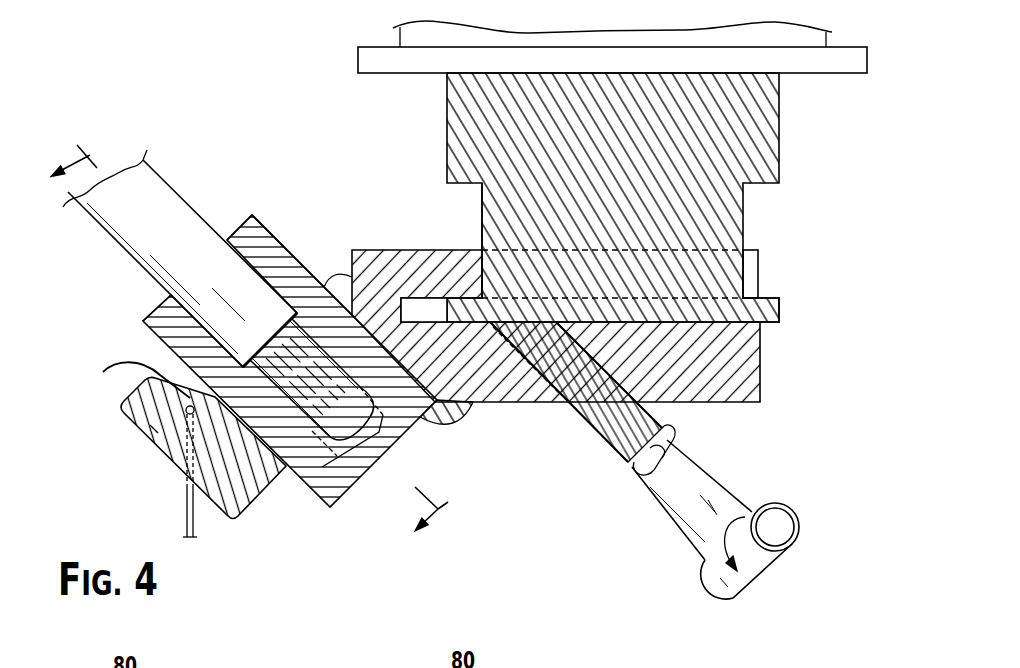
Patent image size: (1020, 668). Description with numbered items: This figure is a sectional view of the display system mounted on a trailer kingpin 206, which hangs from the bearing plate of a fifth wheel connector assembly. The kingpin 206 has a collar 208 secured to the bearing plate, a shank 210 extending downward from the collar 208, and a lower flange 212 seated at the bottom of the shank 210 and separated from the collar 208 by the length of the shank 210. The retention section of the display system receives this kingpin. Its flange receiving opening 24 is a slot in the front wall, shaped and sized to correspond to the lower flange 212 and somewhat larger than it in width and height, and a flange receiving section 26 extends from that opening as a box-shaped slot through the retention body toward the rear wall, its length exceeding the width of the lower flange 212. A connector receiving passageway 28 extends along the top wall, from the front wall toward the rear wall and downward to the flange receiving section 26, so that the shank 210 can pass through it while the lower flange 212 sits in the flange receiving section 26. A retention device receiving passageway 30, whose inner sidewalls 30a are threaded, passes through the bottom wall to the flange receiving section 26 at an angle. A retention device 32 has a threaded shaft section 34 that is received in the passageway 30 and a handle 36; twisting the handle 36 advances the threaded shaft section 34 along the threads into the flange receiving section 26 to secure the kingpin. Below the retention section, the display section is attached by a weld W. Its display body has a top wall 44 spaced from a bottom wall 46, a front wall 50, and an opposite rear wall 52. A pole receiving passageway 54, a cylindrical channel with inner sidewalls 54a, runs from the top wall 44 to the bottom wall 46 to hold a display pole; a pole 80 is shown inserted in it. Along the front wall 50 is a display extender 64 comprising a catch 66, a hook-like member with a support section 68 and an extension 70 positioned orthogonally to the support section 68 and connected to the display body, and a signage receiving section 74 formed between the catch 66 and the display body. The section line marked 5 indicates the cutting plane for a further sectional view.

The kingpin 206 is at (358, 60).
The collar 208 is at (447, 128).
The shank 210 is at (482, 220).
The connector receiving passageway 28 is at (750, 262).
The flange receiving opening 24 is at (760, 300).
The lower flange 212 is at (781, 310).
The flange receiving section 26 is at (423, 307).
The weld W is at (343, 277).
The bottom wall 46 is at (357, 490).
The top wall 44 is at (232, 234).
The rear wall 52 is at (268, 227).
The front wall 50 is at (145, 335).
The tube 80 is at (153, 183).
The pole receiving passageway 54 is at (335, 440).
The inner sidewalls 54a is at (300, 473).
The display extender 64 is at (120, 412).
The catch 66 is at (153, 428).
The support section 68 is at (163, 462).
The extension 70 is at (220, 497).
The signage receiving section 74 is at (103, 372).
The retention device receiving passageway 30 is at (521, 343).
The inner sidewalls 30a is at (547, 380).
The threaded shaft section 34 is at (594, 400).
The retention device 32 is at (706, 473).
The handle 36 is at (770, 558).
The section line 5- 5 is at (259, 325).